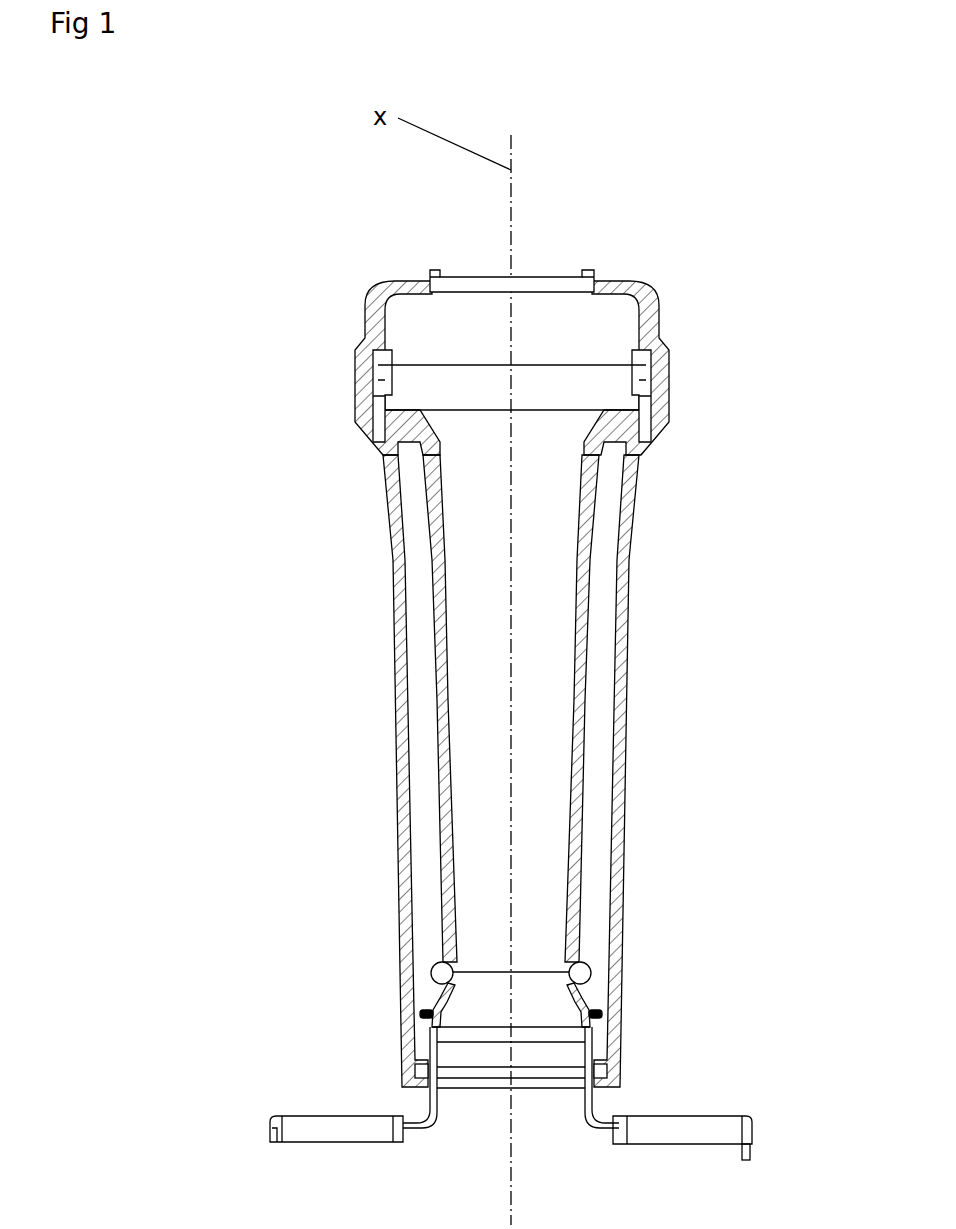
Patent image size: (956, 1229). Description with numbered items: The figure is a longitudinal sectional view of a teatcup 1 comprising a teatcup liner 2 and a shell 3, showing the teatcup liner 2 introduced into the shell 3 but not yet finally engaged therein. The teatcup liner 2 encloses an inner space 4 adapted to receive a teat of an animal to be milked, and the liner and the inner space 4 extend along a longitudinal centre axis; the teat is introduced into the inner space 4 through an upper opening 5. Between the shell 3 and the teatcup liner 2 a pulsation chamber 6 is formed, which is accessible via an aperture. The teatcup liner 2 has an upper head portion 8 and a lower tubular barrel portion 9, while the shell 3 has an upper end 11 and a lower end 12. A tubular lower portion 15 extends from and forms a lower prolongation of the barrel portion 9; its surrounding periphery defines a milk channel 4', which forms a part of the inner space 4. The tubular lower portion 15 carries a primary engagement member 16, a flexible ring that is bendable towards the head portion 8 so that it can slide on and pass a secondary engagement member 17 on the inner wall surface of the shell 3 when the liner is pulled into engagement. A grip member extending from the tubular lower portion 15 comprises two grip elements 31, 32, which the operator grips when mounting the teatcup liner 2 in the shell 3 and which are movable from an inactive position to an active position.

The teatcup 1 is at (257, 346).
The teatcup liner 2 is at (604, 761).
The shell 3 is at (627, 692).
The inner space 4 is at (543, 581).
The milk channel 4' is at (489, 999).
The upper opening 5 is at (551, 271).
The pulsation chamber 6 is at (428, 734).
The upper head portion 8 is at (650, 290).
The lower tubular barrel portion 9 is at (572, 878).
The upper end 11 is at (668, 381).
The lower end 12 is at (615, 1083).
The tubular lower portion 15 is at (580, 1000).
The primary engagement member 16 is at (602, 1012).
The secondary engagement member 17 is at (422, 1072).
The grip element 31 is at (748, 1122).
The grip element 32 is at (270, 1118).